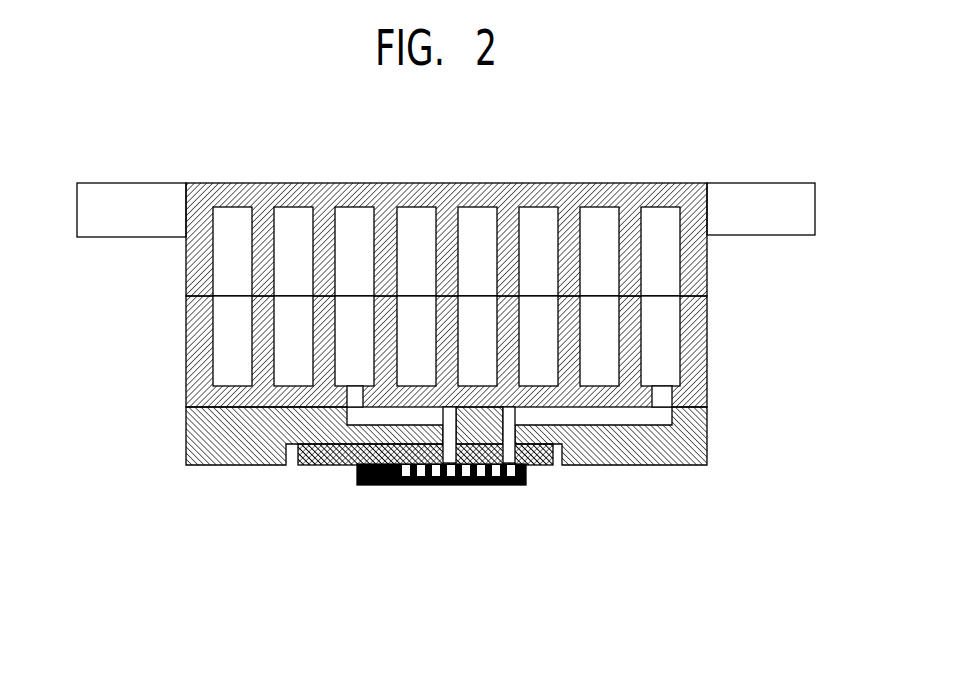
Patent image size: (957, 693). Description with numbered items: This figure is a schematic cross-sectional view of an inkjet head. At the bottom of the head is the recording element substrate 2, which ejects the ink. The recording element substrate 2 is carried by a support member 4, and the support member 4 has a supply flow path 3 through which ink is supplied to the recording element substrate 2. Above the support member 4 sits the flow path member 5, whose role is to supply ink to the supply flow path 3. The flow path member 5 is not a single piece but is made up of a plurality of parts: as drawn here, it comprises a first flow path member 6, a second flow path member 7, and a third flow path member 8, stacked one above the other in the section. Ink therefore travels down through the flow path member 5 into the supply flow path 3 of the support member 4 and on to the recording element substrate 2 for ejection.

The recording element substrate 2 is at (463, 485).
The supply flow path 3 is at (527, 483).
The support member 4 is at (345, 457).
The flow path member 5 is at (518, 324).
The first flow path member 6 is at (487, 431).
The second flow path member 7 is at (698, 383).
The third flow path member 8 is at (703, 253).